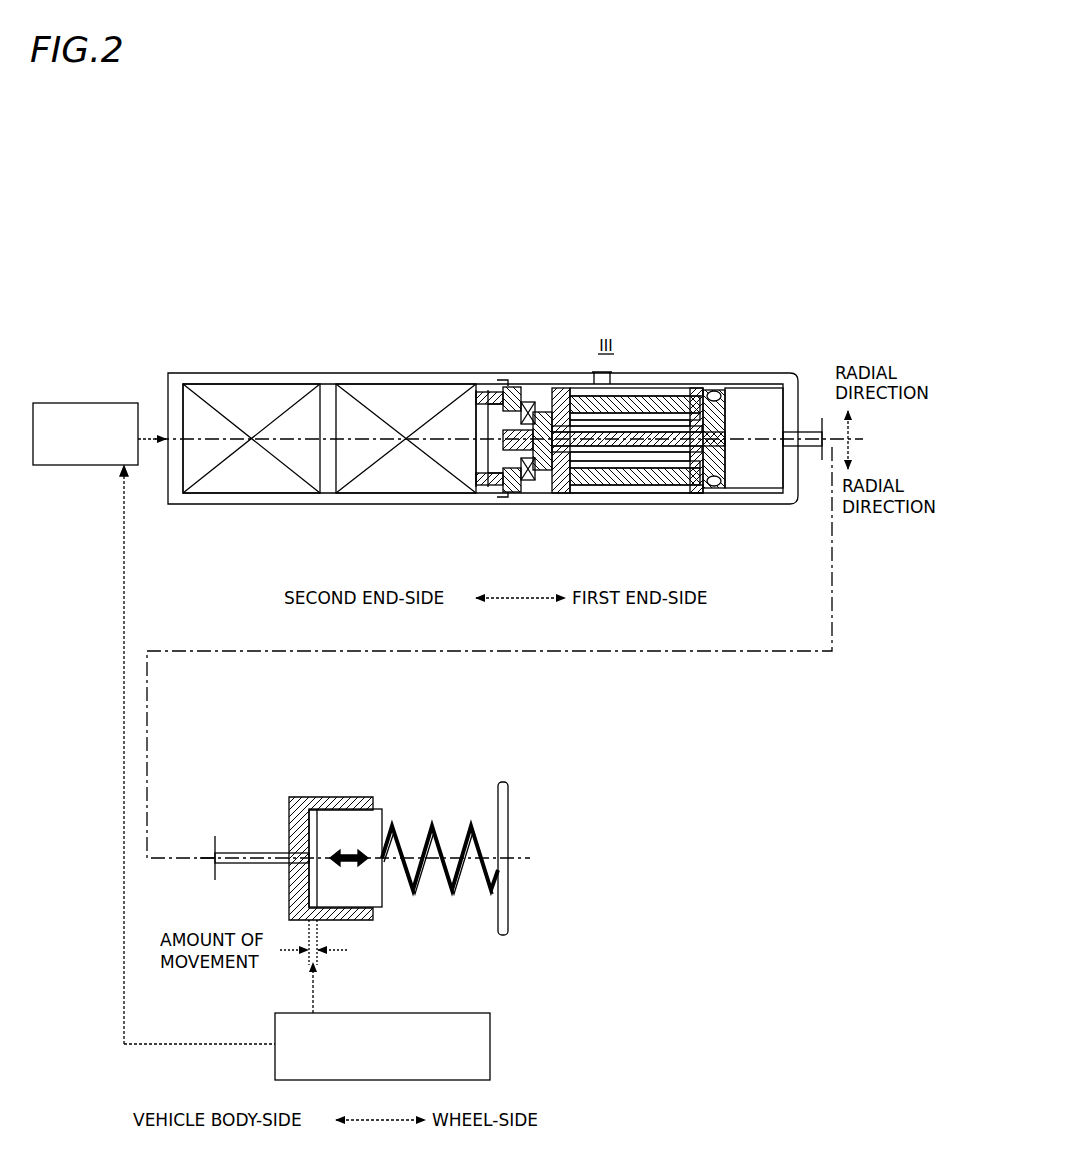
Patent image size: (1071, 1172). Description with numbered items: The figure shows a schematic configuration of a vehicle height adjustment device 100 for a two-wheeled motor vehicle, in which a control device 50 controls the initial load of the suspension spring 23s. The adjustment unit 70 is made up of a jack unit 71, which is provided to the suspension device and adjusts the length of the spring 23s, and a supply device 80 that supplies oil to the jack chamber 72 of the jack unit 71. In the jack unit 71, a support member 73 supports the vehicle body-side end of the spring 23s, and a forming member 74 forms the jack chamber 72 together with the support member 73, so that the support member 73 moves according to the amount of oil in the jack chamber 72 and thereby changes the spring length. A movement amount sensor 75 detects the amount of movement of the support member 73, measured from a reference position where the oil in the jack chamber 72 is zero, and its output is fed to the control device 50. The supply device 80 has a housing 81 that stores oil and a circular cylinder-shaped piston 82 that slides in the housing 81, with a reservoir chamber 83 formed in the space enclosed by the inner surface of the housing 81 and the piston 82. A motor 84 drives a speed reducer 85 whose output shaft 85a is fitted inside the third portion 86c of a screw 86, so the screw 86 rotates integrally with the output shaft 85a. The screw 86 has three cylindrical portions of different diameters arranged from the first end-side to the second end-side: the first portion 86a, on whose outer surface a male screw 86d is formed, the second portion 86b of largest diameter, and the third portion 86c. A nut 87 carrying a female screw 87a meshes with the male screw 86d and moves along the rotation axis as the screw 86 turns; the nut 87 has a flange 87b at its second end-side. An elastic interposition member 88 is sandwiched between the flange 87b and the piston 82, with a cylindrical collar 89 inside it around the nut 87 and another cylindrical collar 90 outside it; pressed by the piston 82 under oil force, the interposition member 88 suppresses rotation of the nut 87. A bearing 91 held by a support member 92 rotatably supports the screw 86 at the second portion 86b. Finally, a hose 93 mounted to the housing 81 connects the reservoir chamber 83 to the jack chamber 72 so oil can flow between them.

The vehicle height adjustment device 100 is at (186, 238).
The adjustment unit 70 is at (249, 268).
The control device 50 is at (85, 372).
The jack unit 71 is at (406, 729).
The jack chamber 72 is at (318, 808).
The support member 73 is at (358, 800).
The forming member 74 is at (299, 797).
The movement amount sensor 75 is at (332, 1013).
The supply device 80 is at (699, 303).
The housing 81 is at (760, 375).
The piston 82 is at (717, 383).
The reservoir chamber 83 is at (742, 427).
The motor 84 is at (257, 383).
The speed reducer 85 is at (397, 383).
The output shaft 85a is at (486, 382).
The screw 86 is at (505, 303).
The first portion 86a is at (630, 383).
The second portion 86b is at (548, 383).
The third portion 86c is at (520, 383).
The male screw 86d is at (673, 383).
The nut 87 is at (580, 493).
The female screw 87a is at (596, 493).
The flange 87b is at (560, 492).
The interposition member 88 is at (630, 493).
The collar 89 is at (656, 493).
The collar 90 is at (686, 486).
The bearing 91 is at (524, 494).
The support member 92 is at (486, 501).
The hose 93 is at (810, 385).
The spring 23s is at (428, 895).